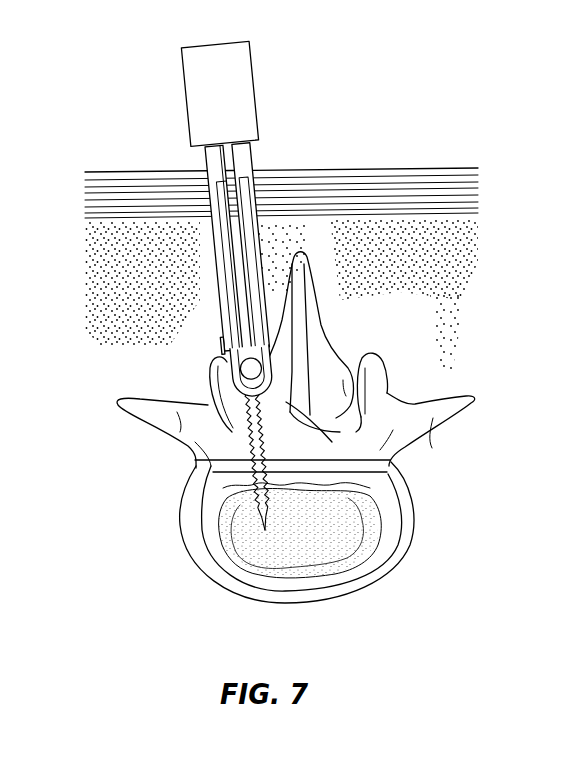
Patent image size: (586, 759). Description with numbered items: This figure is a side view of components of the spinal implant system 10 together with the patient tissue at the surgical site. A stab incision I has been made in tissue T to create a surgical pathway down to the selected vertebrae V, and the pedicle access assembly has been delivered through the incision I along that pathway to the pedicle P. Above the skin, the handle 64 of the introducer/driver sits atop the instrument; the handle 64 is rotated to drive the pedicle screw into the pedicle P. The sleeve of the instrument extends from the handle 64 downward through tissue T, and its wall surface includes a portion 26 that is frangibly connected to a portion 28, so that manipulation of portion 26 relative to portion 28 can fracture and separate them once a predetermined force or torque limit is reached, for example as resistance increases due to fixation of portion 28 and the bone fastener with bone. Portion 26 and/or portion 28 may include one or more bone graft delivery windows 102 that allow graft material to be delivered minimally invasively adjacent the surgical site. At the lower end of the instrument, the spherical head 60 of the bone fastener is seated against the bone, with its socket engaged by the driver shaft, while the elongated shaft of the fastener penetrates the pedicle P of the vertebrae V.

The spinal implant system 10 is at (214, 250).
The handle 64 is at (238, 80).
The portion 26 is at (253, 193).
The bone graft delivery window 102 is at (221, 346).
The spherical head 60 is at (247, 372).
The portion 28 is at (263, 372).
The stab incision I is at (198, 152).
The tissue T is at (450, 276).
The vertebrae V is at (164, 519).
The pedicle P is at (276, 396).